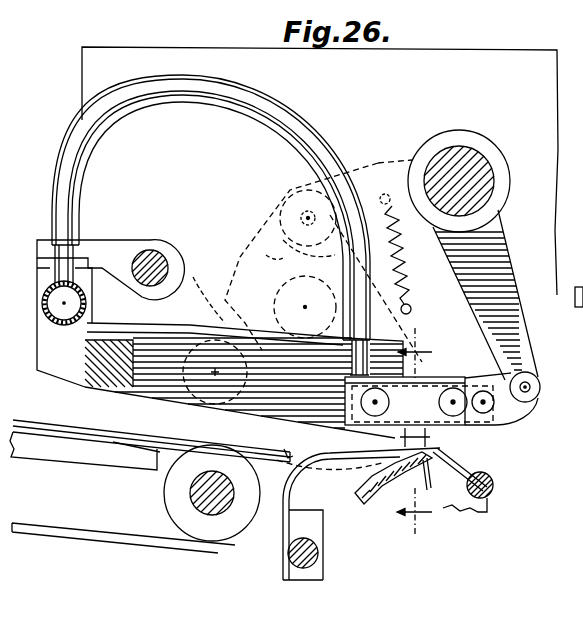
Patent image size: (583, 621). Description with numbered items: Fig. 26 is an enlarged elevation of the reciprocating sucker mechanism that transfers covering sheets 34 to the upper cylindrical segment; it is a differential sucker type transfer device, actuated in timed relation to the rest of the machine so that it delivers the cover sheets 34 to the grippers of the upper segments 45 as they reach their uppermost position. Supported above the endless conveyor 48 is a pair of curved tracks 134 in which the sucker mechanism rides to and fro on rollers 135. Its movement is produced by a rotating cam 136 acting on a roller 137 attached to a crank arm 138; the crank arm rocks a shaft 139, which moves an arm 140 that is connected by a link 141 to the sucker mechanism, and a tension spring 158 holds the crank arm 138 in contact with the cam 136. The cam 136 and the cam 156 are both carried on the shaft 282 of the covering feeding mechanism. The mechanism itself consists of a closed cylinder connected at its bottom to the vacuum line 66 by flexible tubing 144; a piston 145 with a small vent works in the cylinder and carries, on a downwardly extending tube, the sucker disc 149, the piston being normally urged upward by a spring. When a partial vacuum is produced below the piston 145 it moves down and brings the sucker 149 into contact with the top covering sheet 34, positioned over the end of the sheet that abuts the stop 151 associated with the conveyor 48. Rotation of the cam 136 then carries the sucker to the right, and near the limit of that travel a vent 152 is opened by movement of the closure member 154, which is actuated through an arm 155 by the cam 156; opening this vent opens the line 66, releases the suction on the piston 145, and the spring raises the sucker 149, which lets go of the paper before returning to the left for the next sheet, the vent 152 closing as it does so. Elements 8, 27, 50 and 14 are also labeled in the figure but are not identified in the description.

The frame 8 is at (550, 96).
The flexible tubing 144 is at (310, 113).
The shaft 139 is at (487, 152).
The arm 140 is at (530, 225).
The link 141 is at (514, 406).
The rollers 135 is at (580, 306).
The direction arrow 27 is at (422, 432).
The piston 145 is at (347, 383).
The vacuum line 66 is at (42, 303).
The closure member 154 is at (107, 242).
The vent 152 is at (43, 267).
The roller 137 is at (293, 195).
The shaft 282 is at (305, 297).
The rotating cam 136 is at (322, 262).
The crank arm 138 is at (378, 163).
The arm 155 is at (193, 277).
The cam 156 is at (266, 255).
The curved tracks 134 is at (187, 391).
The tension spring 158 is at (410, 270).
The covering sheets 34 is at (63, 407).
The stop 151 is at (287, 452).
The endless conveyor 48 is at (65, 530).
The sucker disc 149 is at (377, 457).
The upper segments 45 is at (363, 498).
The rod 50 is at (466, 460).
The pin 14 is at (490, 475).